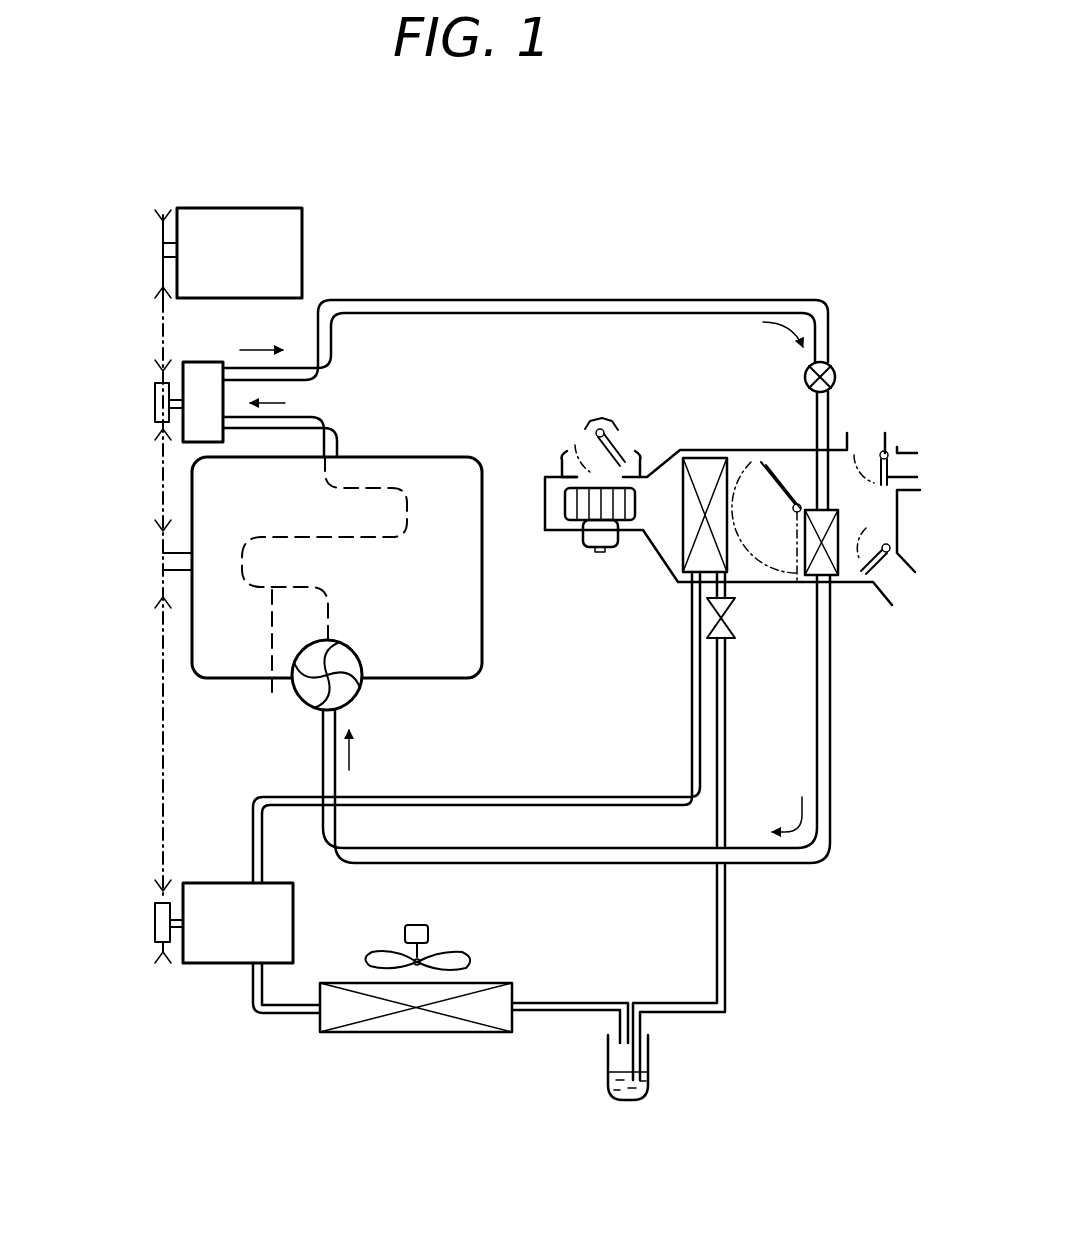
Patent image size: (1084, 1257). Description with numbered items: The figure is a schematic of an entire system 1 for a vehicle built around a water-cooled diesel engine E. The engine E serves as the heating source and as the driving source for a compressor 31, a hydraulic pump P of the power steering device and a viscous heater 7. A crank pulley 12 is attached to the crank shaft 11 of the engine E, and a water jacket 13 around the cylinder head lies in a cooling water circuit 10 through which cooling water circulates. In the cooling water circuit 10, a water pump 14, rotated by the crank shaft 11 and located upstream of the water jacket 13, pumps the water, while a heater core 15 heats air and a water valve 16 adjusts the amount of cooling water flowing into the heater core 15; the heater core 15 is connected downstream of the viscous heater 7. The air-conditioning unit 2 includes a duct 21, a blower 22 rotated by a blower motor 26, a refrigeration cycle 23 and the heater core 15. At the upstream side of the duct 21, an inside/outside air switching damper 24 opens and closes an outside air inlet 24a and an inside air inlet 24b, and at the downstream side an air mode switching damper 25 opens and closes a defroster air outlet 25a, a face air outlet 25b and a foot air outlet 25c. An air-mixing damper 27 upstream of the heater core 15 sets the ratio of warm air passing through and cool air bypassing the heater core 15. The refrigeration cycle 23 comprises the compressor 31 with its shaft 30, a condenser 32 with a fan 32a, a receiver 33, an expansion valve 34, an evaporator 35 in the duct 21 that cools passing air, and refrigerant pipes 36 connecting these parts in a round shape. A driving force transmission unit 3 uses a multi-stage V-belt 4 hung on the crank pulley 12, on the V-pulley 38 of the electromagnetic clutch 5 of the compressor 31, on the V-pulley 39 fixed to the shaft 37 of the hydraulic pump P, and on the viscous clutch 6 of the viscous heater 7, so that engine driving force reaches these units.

The entire system 1 is at (758, 282).
The air-conditioning unit 2 is at (566, 408).
The driving force transmission unit 3 is at (148, 262).
The V-belt 4 is at (160, 768).
The electromagnetic clutch 5 is at (154, 912).
The viscous clutch 6 is at (153, 400).
The viscous heater 7 is at (200, 372).
The cooling water circuit 10 is at (600, 299).
The crank shaft 11 is at (183, 572).
The crank pulley 12 is at (162, 582).
The water jacket 13 is at (269, 663).
The water pump 14 is at (357, 686).
The heater core 15 is at (830, 570).
The water valve 16 is at (803, 370).
The duct 21 is at (672, 580).
The blower 22 is at (548, 505).
The refrigeration cycle 23 is at (737, 1027).
The inside/outside air switching damper 24 is at (630, 448).
The outside air inlet 24a is at (575, 447).
The inside air inlet 24b is at (622, 440).
The air mode switching damper 25 is at (890, 477).
The defroster air outlet 25a is at (873, 447).
The face air outlet 25b is at (923, 467).
The foot air outlet 25c is at (903, 598).
The blower motor 26 is at (596, 548).
The air-mixing damper 27 is at (797, 505).
The shaft 30 is at (178, 928).
The compressor 31 is at (291, 916).
The condenser 32 is at (422, 1024).
The fan 32a is at (428, 923).
The receiver 33 is at (648, 1088).
The expansion valve 34 is at (733, 641).
The evaporator 35 is at (706, 465).
The refrigerant pipes 36 is at (600, 800).
The shaft 37 is at (172, 246).
The V-pulley 38 is at (162, 958).
The V-pulley 39 is at (160, 290).
The hydraulic pump P is at (303, 232).
The engine E is at (465, 680).